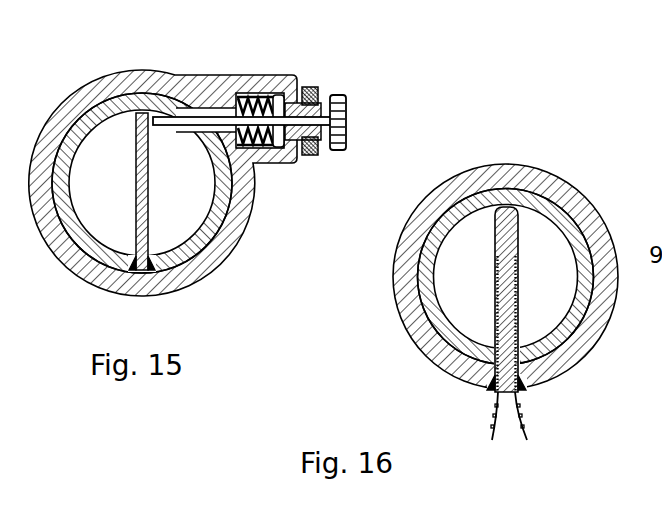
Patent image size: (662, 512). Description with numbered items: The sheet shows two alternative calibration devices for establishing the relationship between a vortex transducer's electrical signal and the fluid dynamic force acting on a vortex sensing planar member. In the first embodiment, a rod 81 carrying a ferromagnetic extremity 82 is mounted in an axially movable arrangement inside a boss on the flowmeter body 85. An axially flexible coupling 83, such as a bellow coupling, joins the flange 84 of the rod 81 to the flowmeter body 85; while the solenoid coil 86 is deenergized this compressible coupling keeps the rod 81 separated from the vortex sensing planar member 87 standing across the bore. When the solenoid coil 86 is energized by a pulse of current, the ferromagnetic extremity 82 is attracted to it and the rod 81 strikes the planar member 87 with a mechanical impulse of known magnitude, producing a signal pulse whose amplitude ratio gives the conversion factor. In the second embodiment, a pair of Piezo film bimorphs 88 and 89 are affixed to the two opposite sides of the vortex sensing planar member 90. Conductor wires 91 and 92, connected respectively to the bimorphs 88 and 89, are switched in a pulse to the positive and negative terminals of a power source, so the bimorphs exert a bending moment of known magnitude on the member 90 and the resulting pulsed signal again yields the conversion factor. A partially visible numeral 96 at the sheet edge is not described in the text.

In FIG. 15, the rod 81 is at (232, 92).
In FIG. 15, the ferromagnetic extremity 82 is at (347, 96).
In FIG. 15, the axially flexible coupling 83 is at (256, 95).
In FIG. 15, the flange 84 is at (278, 162).
In FIG. 15, the flowmeter body 85 is at (213, 147).
In FIG. 15, the solenoid coil 86 is at (316, 86).
In FIG. 15, the vortex sensing planar member 87 is at (136, 203).
In FIG. 16, the Piezo film bimorph 88 is at (495, 285).
In FIG. 16, the Piezo film bimorph 89 is at (518, 312).
In FIG. 16, the vortex sensing planar member 90 is at (495, 236).
In FIG. 16, the conductor wire 91 is at (494, 431).
In FIG. 16, the conductor wire 92 is at (530, 428).
In FIG. 16, the partial numeral 96 is at (651, 210).